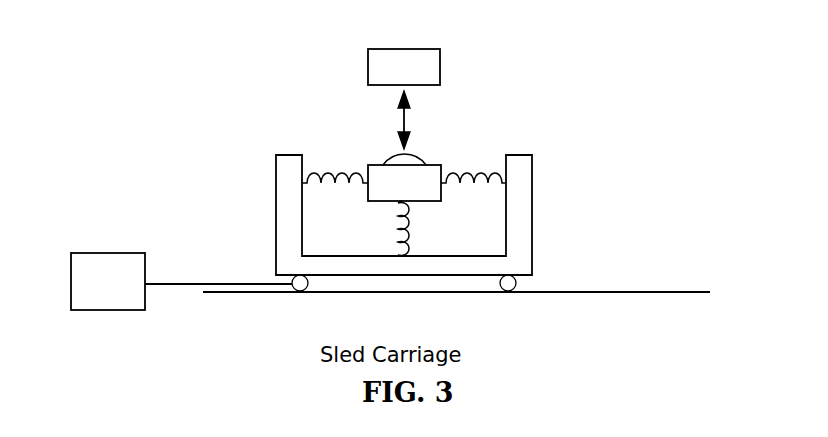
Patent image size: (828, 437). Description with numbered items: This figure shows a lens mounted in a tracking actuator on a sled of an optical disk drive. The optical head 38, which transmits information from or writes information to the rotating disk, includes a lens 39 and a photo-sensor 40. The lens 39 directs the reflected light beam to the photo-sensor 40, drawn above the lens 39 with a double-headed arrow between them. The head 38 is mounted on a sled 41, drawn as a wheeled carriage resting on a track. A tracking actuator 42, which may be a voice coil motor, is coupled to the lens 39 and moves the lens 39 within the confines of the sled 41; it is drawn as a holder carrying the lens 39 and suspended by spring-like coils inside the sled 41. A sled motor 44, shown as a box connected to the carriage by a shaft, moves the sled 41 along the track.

The optical head 38 is at (525, 93).
The lens 39 is at (426, 163).
The photo-sensor 40 is at (436, 50).
The sled 41 is at (532, 265).
The tracking actuator 42 is at (368, 165).
The sled motor 44 is at (90, 253).